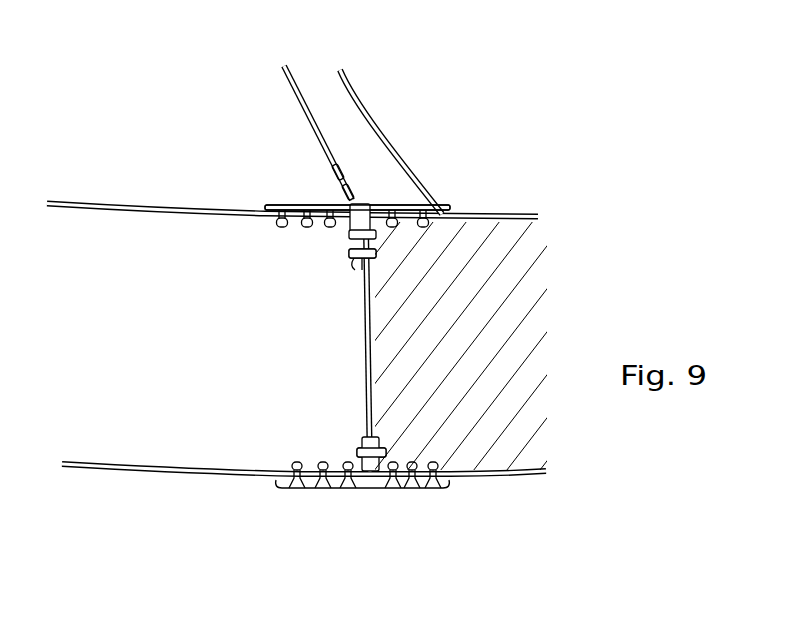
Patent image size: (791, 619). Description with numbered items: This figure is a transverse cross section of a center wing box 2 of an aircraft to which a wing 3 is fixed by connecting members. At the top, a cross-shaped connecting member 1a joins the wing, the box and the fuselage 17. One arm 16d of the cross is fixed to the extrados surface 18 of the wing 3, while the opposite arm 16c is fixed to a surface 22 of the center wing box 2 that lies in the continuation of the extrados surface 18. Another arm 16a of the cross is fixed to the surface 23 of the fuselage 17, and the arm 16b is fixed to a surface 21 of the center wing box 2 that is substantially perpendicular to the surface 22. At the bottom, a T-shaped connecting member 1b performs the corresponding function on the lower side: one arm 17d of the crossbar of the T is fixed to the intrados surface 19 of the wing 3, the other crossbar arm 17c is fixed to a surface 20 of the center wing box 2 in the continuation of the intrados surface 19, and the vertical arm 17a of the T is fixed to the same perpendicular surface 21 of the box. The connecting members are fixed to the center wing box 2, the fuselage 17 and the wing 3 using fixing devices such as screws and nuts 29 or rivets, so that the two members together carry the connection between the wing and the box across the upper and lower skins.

The cross-shaped connecting member 1a is at (403, 212).
The T-shaped connecting member 1b is at (354, 483).
The center wing box 2 is at (547, 450).
The wing 3 is at (172, 440).
The arm of the cross 16a is at (352, 197).
The arm of the cross 16b is at (349, 251).
The arm of the cross 16c is at (443, 212).
The arm of the cross 16d is at (293, 205).
The fuselage 17 is at (366, 88).
The vertical arm of the T 17a is at (362, 437).
The arm of the crossbar of the T 17c is at (426, 488).
The arm of the crossbar of the T 17d is at (300, 488).
The extrados surface 18 is at (139, 203).
The intrados surface 19 is at (203, 478).
The surface of the center wing box 20 is at (497, 481).
The surface of the center wing box 21 is at (362, 340).
The surface of the center wing box 22 is at (507, 214).
The surface of the fuselage 23 is at (298, 96).
The screws and nuts 29 is at (377, 254).